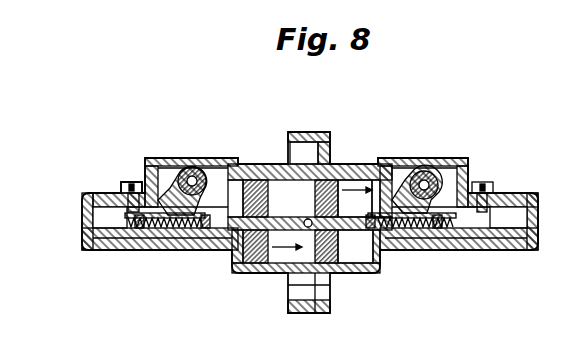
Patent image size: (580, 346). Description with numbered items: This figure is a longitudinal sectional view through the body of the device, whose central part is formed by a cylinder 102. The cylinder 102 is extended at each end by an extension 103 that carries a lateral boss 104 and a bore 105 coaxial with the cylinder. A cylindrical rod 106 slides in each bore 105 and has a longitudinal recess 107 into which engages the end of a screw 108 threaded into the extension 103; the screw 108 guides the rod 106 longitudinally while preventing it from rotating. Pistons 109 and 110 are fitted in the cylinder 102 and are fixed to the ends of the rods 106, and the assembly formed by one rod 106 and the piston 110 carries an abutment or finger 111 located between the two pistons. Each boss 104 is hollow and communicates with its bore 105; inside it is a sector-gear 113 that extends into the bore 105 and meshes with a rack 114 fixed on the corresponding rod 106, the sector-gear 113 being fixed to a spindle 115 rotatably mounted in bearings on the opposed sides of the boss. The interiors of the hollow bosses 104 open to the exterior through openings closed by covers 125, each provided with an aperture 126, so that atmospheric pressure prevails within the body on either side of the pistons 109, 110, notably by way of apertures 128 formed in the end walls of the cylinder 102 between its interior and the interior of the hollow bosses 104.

The cylinder 102 is at (331, 163).
The extension 103 is at (188, 246).
The lateral boss 104 is at (144, 178).
The bore 105 is at (516, 213).
The cylindrical rod 106 is at (110, 232).
The longitudinal recess 107 is at (83, 196).
The screw 108 is at (118, 190).
The piston 109 is at (256, 258).
The piston 110 is at (333, 274).
The abutment or finger 111 is at (298, 312).
The sector-gear 113 is at (172, 188).
The rack 114 is at (160, 233).
The spindle 115 is at (197, 166).
The cover 125 is at (152, 157).
The aperture 126 is at (199, 159).
The aperture 128 is at (244, 167).